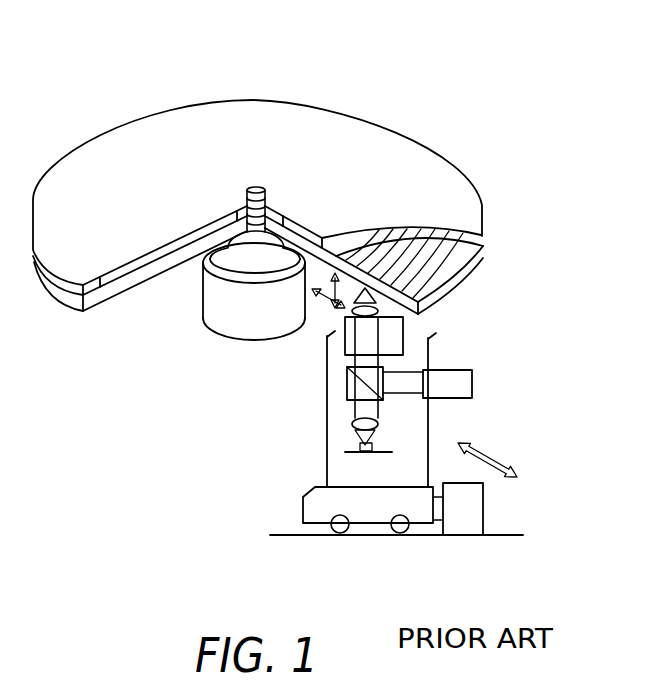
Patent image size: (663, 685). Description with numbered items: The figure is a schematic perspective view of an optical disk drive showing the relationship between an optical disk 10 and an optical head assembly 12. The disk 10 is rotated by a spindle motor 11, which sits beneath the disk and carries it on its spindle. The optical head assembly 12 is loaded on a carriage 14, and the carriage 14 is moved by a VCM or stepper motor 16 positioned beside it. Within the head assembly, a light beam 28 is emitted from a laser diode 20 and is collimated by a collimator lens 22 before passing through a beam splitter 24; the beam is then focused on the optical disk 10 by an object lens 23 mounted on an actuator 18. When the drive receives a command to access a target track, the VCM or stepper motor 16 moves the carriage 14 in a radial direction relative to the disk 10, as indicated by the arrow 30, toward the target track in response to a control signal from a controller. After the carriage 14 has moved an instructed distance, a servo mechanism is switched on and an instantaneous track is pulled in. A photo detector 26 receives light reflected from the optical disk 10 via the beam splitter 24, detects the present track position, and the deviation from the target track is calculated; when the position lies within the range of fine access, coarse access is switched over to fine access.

The optical disk 10 is at (168, 118).
The spindle motor 11 is at (207, 292).
The optical head assembly 12 is at (341, 378).
The carriage 14 is at (302, 506).
The VCM or stepper motor 16 is at (468, 513).
The actuator 18 is at (404, 332).
The laser diode 20 is at (346, 452).
The collimator lens 22 is at (353, 424).
The object lens 23 is at (338, 318).
The beam splitter 24 is at (388, 400).
The photo detector 26 is at (473, 385).
The light beam 28 is at (404, 350).
The arrow 30 is at (488, 458).